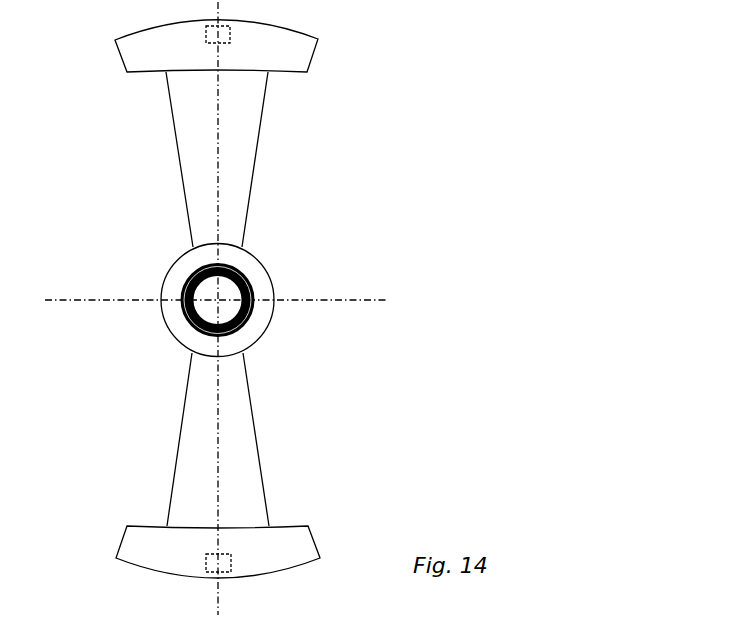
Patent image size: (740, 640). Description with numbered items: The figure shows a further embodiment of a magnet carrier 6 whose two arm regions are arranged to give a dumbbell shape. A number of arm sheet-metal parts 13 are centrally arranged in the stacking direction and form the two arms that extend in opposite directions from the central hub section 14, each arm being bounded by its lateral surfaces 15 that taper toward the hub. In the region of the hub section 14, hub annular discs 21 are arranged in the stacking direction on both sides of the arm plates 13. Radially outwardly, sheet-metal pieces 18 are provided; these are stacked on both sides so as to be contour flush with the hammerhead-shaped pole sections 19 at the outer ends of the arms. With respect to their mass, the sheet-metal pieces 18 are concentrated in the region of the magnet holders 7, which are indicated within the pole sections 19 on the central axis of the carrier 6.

The magnet carrier 6 is at (340, 212).
The magnet holder 7 is at (206, 31).
The arm sheet-metal part 13 is at (255, 160).
The hub section 14 is at (287, 334).
The pole surface 15 is at (242, 108).
The sheet-metal piece 18 is at (302, 46).
The pole section 19 is at (138, 89).
The hub annular disc 21 is at (258, 277).